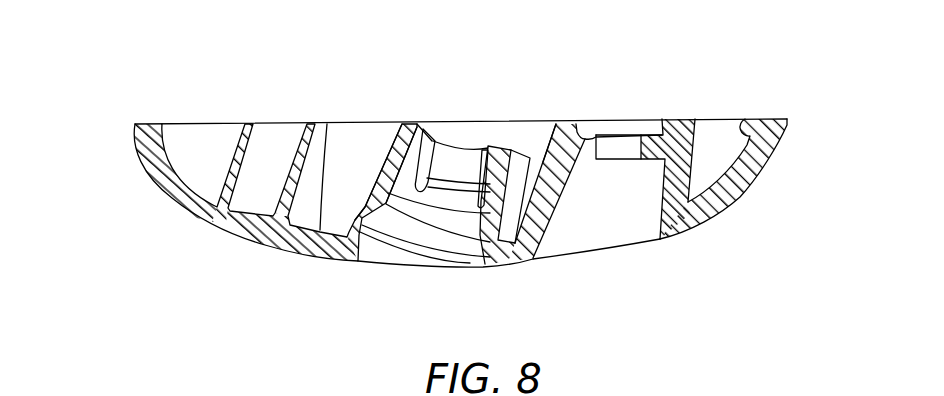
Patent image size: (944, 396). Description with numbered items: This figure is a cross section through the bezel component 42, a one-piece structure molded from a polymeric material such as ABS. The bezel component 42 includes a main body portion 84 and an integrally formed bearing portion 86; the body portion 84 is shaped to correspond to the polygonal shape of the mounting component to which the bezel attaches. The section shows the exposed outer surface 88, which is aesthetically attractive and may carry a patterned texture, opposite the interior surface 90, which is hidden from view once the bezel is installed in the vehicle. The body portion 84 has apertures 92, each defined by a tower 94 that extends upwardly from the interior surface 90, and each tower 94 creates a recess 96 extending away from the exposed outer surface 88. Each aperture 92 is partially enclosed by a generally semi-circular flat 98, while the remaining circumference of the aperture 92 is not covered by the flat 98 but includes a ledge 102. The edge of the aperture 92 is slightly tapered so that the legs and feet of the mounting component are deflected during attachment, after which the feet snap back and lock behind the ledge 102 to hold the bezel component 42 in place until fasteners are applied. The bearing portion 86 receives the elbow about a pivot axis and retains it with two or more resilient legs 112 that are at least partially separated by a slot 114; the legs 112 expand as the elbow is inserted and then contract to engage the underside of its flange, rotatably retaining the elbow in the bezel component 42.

The bezel component 42 is at (444, 164).
The main body portion 84 is at (743, 214).
The bearing portion 86 is at (383, 156).
The exposed outer surface 88 is at (263, 250).
The interior surface 90 is at (745, 119).
The aperture 92 is at (640, 110).
The tower 94 is at (555, 125).
The recess 96 is at (545, 218).
The semi-circular flat 98 is at (625, 159).
The ledge 102 is at (606, 159).
The resilient legs 112 is at (401, 123).
The slot 114 is at (433, 150).